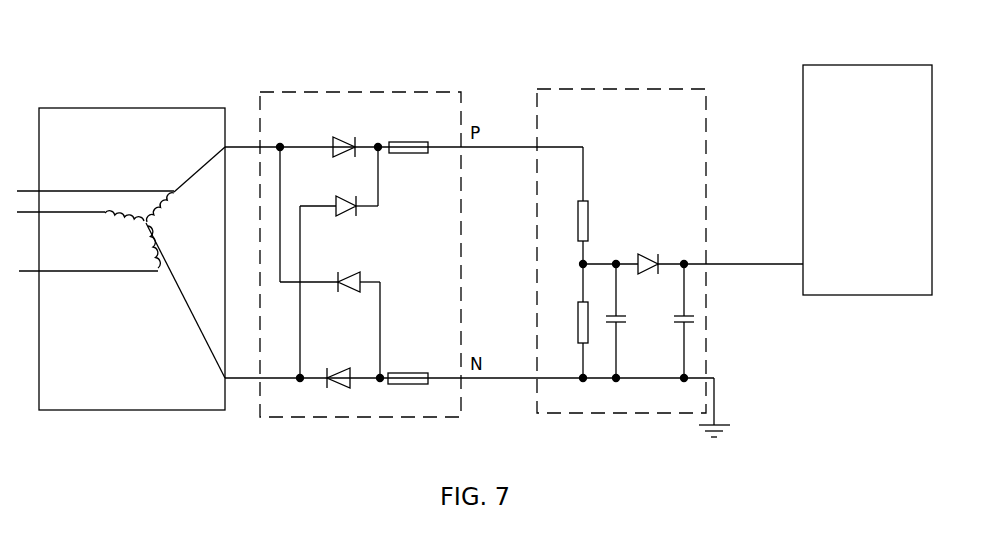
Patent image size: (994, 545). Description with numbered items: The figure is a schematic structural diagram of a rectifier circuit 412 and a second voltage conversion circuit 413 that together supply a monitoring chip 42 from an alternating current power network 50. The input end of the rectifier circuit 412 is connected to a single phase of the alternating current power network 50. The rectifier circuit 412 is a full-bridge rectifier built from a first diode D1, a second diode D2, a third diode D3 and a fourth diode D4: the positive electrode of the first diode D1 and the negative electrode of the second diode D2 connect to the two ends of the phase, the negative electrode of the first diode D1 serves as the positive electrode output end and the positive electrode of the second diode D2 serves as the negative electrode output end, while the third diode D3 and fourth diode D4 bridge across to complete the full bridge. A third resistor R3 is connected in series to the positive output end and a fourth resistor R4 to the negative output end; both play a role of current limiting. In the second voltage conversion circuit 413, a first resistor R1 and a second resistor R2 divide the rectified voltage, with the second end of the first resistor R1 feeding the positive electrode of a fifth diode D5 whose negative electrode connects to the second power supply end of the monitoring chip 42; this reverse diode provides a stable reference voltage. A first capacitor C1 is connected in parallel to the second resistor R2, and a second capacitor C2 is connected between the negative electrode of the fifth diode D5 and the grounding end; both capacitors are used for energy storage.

The alternating current power network 50 is at (133, 108).
The rectifier circuit 412 is at (360, 236).
The second voltage conversion circuit 413 is at (670, 244).
The monitoring chip 42 is at (866, 65).
The first diode D1 is at (343, 134).
The second diode D2 is at (339, 367).
The third diode D3 is at (339, 194).
The fourth diode D4 is at (330, 269).
The fifth diode D5 is at (651, 252).
The first resistor R1 is at (567, 221).
The second resistor R2 is at (567, 322).
The third resistor R3 is at (408, 132).
The fourth resistor R4 is at (408, 365).
The first capacitor C1 is at (628, 321).
The second capacitor C2 is at (673, 321).